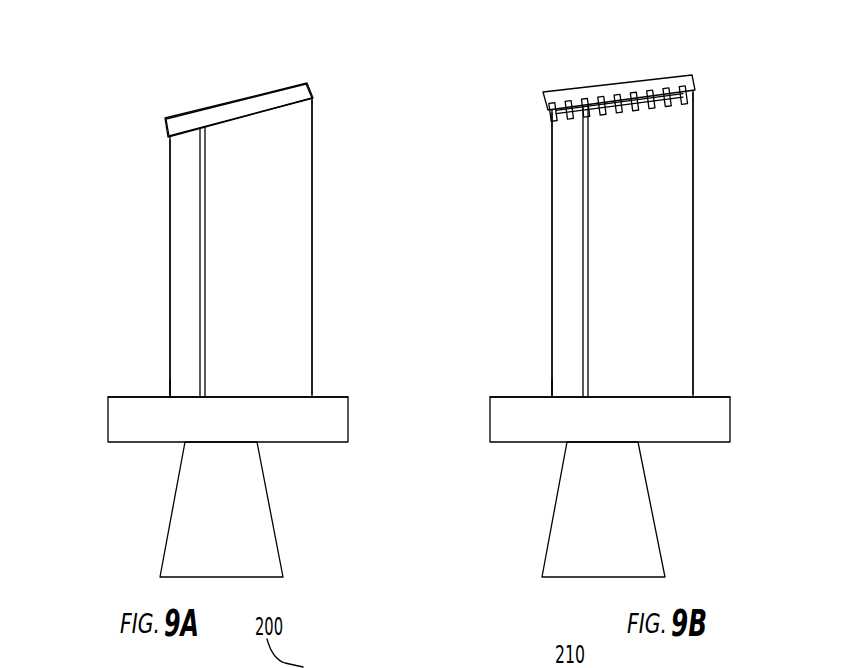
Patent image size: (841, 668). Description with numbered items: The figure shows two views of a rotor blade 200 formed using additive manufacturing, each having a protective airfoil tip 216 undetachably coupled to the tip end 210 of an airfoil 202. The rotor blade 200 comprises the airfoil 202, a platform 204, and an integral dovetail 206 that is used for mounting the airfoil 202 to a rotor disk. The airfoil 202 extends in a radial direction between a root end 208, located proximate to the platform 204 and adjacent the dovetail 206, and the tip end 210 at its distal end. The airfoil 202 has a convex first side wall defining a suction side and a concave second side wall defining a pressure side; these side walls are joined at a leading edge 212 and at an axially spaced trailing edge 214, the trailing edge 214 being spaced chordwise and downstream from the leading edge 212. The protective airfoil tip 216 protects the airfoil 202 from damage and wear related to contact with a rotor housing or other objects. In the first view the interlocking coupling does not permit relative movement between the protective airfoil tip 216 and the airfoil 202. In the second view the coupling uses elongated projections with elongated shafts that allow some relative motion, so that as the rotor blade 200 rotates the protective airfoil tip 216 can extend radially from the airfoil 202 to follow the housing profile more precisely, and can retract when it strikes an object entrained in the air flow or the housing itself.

In FIG. 9A, the rotor blade 200 is at (133, 97).
In FIG. 9B, the rotor blade 200 is at (515, 97).
In FIG. 9A, the airfoil 202 is at (290, 258).
In FIG. 9B, the airfoil 202 is at (672, 258).
In FIG. 9A, the platform 204 is at (137, 428).
In FIG. 9B, the platform 204 is at (518, 428).
In FIG. 9A, the integral dovetail 206 is at (187, 533).
In FIG. 9B, the integral dovetail 206 is at (570, 533).
In FIG. 9A, the root end 208 is at (165, 392).
In FIG. 9B, the root end 208 is at (547, 392).
In FIG. 9A, the tip end 210 is at (313, 106).
In FIG. 9B, the tip end 210 is at (697, 106).
In FIG. 9A, the leading edge 212 is at (168, 227).
In FIG. 9B, the leading edge 212 is at (550, 227).
In FIG. 9A, the trailing edge 214 is at (312, 347).
In FIG. 9B, the trailing edge 214 is at (693, 347).
In FIG. 9A, the protective airfoil tip 216 is at (230, 108).
In FIG. 9B, the protective airfoil tip 216 is at (610, 95).